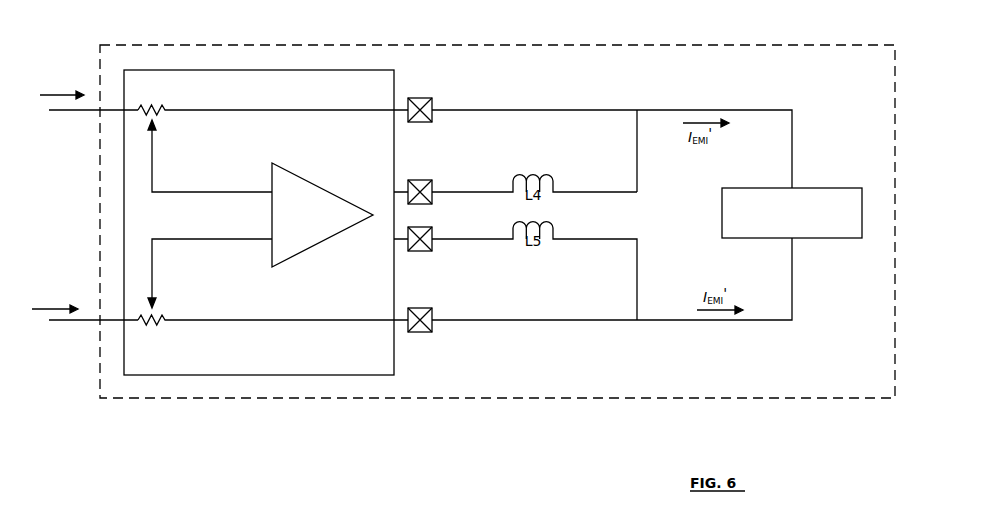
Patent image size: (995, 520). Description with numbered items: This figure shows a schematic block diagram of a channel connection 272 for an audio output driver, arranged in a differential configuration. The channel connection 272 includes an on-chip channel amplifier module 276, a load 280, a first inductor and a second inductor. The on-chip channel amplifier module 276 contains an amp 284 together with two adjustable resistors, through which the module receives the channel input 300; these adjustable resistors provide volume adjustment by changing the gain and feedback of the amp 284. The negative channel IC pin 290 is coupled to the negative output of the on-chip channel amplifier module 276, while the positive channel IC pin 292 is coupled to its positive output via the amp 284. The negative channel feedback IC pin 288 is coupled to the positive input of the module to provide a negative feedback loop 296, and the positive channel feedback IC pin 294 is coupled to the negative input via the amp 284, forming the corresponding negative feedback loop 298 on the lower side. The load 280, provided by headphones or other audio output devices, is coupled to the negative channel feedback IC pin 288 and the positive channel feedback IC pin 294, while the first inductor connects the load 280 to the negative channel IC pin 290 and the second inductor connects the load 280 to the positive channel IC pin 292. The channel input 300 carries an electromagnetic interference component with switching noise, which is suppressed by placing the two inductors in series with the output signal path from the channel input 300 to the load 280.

The channel connection 272 is at (497, 221).
The on-chip channel amplifier module 276 is at (266, 222).
The load 280 is at (792, 213).
The amp 284 is at (322, 215).
The negative channel feedback IC pin 288 is at (432, 98).
The negative channel IC pin 290 is at (432, 180).
The positive channel IC pin 292 is at (432, 251).
The positive channel feedback IC pin 294 is at (432, 332).
The negative feedback loop 296 is at (227, 154).
The negative feedback loop 298 is at (227, 277).
The channel input 300 is at (77, 197).